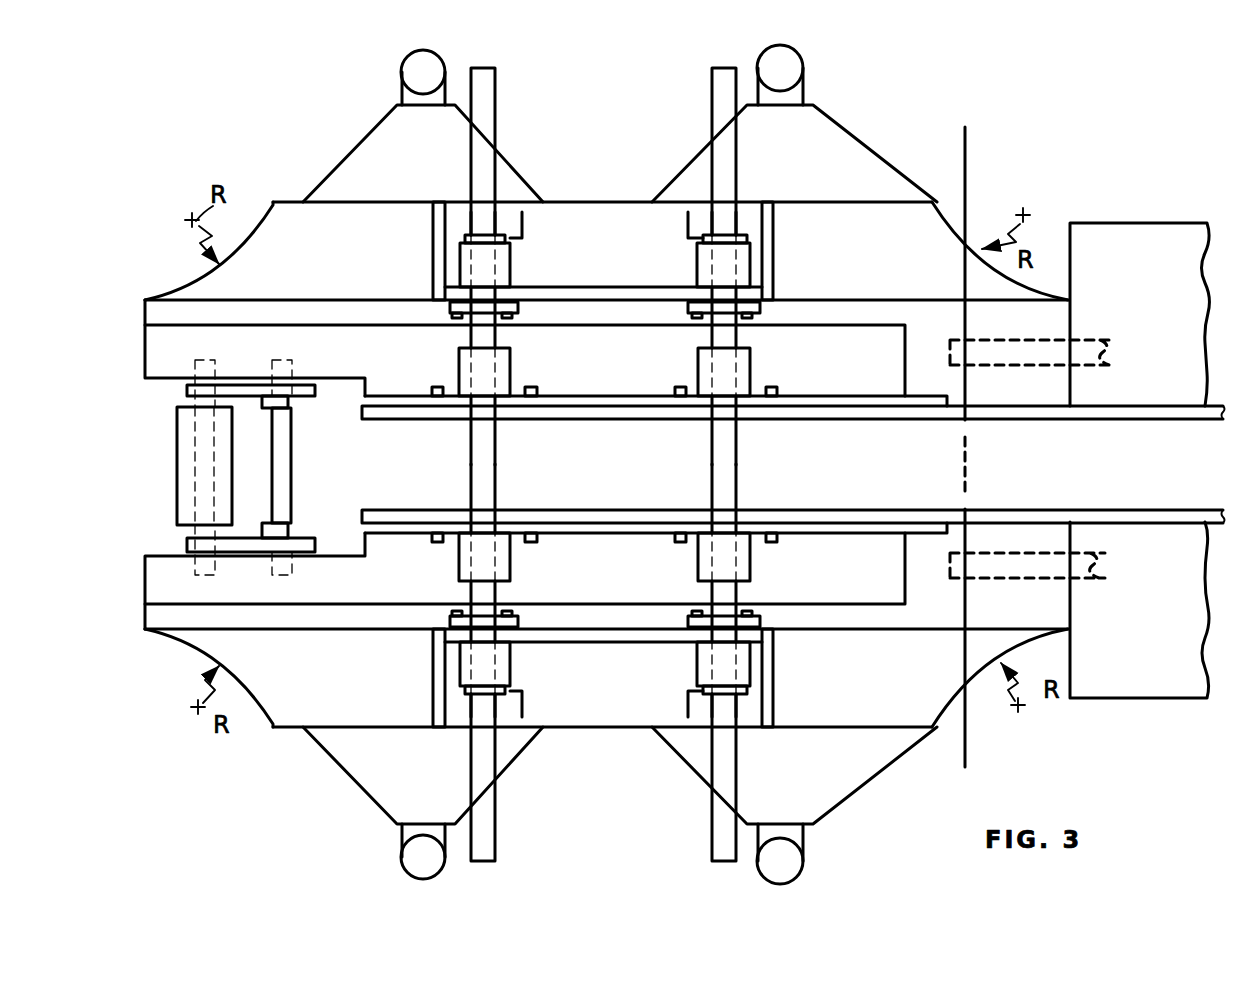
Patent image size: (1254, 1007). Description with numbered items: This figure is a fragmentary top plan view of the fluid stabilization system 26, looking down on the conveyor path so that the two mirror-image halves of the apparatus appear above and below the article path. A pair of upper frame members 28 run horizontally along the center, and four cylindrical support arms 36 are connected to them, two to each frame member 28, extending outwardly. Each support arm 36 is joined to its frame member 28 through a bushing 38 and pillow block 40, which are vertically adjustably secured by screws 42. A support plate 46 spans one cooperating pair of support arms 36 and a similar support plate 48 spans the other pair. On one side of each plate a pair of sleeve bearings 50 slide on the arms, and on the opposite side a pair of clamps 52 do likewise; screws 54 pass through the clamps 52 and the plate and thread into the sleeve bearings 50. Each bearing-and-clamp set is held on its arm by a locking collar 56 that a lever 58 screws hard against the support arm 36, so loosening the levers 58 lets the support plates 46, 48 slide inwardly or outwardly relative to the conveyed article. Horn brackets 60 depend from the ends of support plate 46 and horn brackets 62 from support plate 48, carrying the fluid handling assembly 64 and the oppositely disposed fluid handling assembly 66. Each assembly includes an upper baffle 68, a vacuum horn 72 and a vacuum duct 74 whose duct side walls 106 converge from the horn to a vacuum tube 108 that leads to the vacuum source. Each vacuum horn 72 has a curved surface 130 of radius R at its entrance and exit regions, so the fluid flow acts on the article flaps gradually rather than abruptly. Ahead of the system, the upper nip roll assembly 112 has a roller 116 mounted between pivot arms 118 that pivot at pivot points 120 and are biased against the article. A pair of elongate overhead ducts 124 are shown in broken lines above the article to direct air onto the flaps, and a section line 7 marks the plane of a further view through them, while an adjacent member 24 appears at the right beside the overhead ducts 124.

The section line 7- 7 is at (1000, 144).
The support block 24 is at (1176, 180).
The fluid stabilization system 26 is at (188, 75).
The upper frame members 28 is at (598, 413).
The cylindrical support arms 36 is at (495, 122).
The bushing 38 is at (511, 362).
The pillow block 40 is at (412, 396).
The screws 42 is at (538, 390).
The support plate 46 is at (622, 285).
The support plate 48 is at (606, 630).
The sleeve bearings 50 is at (511, 265).
The clamps 52 is at (455, 305).
The screws 54 is at (466, 318).
The locking collar 56 is at (470, 235).
The lever 58 is at (528, 232).
The horn brackets 60 is at (433, 222).
The horn brackets 62 is at (433, 692).
The fluid handling assembly 64 is at (1087, 76).
The fluid handling assembly 66 is at (1142, 768).
The upper baffle 68 is at (148, 345).
The vacuum horn 72 is at (1001, 188).
The vacuum duct 74 is at (338, 98).
The duct side walls 106 is at (332, 172).
The vacuum tube 108 is at (446, 57).
The upper nip roll assembly 112 is at (210, 474).
The roller 116 is at (180, 482).
The pivot arms 118 is at (236, 384).
The pivot points 120 is at (287, 410).
The elongate overhead ducts 124 is at (1088, 337).
The curved surface 130 is at (203, 278).